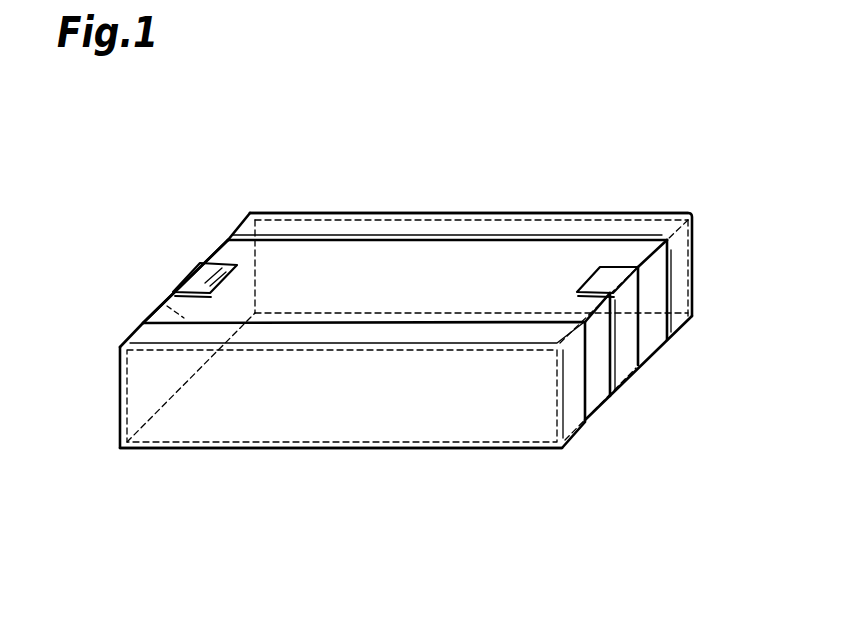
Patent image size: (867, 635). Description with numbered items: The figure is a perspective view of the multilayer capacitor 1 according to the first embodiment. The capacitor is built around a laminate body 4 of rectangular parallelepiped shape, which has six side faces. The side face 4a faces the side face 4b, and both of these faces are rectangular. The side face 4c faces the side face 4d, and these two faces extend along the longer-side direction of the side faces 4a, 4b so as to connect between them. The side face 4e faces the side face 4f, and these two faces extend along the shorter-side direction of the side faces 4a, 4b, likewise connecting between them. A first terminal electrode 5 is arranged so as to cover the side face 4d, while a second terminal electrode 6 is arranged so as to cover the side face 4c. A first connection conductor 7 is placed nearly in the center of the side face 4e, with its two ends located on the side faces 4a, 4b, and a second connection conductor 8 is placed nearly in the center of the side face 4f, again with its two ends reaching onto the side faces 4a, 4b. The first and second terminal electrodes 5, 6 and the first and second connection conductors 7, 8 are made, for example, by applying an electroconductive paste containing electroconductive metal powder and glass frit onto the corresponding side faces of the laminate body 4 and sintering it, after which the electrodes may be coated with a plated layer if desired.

The multilayer capacitor 1 is at (702, 143).
The laminate body 4 is at (219, 254).
The side face 4a is at (378, 262).
The side face 4b is at (605, 400).
The side face 4c is at (355, 412).
The side face 4d is at (515, 258).
The side face 4e is at (168, 302).
The side face 4f is at (650, 297).
The first terminal electrode 5 is at (282, 213).
The second terminal electrode 6 is at (197, 450).
The first connection conductor 7 is at (190, 272).
The second connection conductor 8 is at (625, 333).